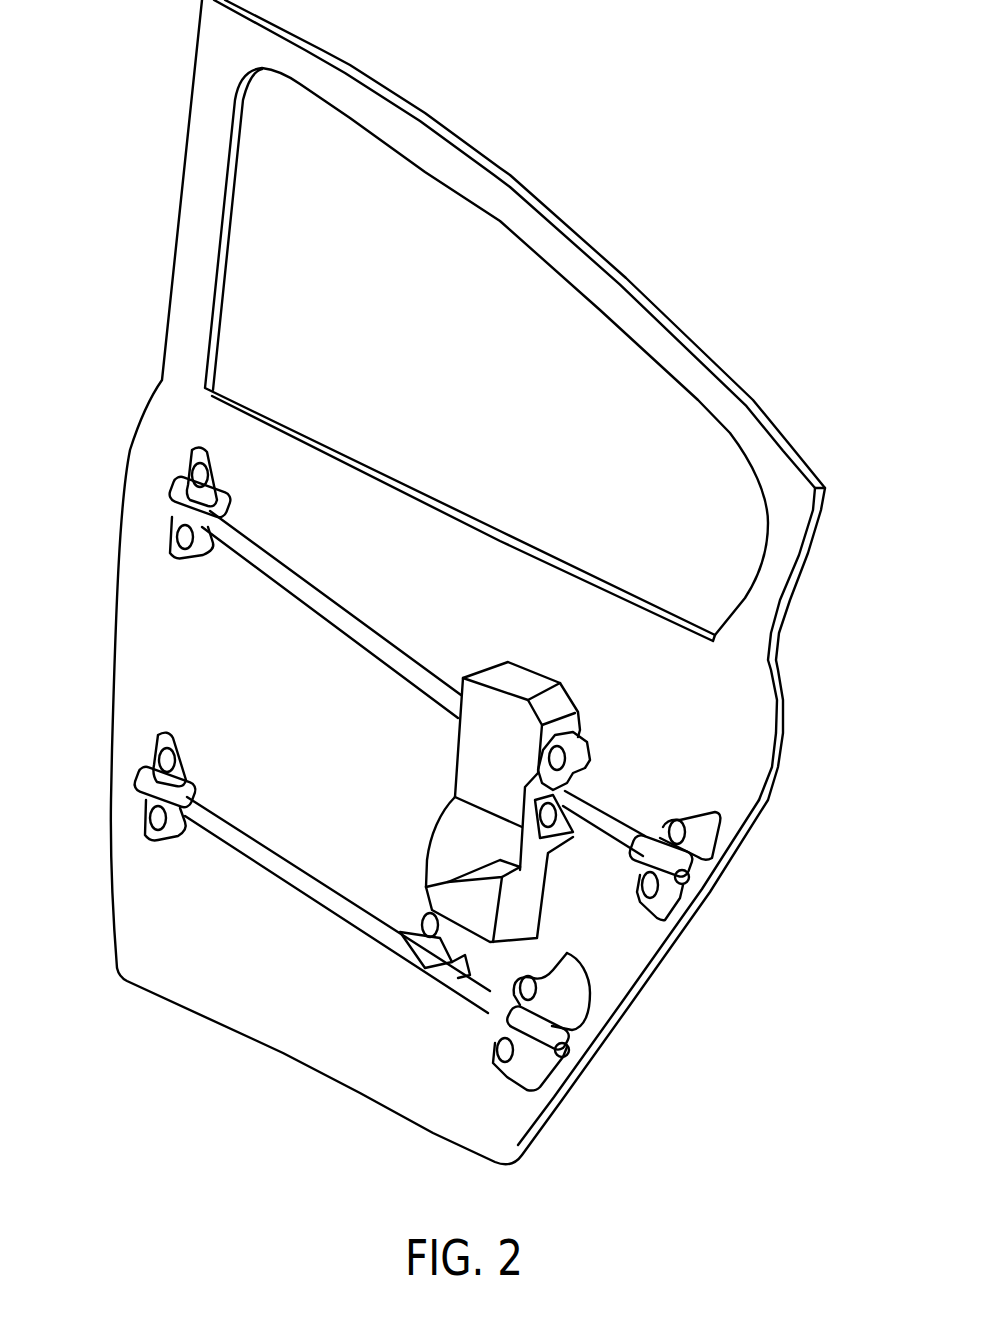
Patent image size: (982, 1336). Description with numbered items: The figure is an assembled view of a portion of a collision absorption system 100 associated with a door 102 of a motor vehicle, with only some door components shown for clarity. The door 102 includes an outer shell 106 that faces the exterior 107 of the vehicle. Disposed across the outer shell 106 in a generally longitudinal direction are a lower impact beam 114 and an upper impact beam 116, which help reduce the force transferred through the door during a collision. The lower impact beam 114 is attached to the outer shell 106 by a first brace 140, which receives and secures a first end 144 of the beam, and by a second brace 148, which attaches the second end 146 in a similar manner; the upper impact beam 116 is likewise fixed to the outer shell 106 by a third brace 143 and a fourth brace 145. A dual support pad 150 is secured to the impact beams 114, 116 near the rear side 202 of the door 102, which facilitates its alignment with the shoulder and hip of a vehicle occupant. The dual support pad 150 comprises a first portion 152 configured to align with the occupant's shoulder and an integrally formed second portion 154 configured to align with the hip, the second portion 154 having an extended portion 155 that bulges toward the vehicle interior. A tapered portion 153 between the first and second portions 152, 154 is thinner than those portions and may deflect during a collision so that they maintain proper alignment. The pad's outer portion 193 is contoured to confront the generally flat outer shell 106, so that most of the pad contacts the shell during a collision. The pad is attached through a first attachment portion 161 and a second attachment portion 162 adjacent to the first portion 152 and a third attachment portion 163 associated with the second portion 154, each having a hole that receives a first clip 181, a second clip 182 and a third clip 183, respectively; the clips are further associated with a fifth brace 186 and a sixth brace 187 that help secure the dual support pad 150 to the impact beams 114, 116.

The collision absorption system 100 is at (402, 602).
The door 102 is at (113, 318).
The outer shell 106 is at (668, 312).
The exterior 107 is at (665, 88).
The lower impact beam 114 is at (243, 843).
The upper impact beam 116 is at (318, 602).
The first brace 140 is at (577, 1003).
The third brace 143 is at (702, 838).
The first end 144 is at (567, 1053).
The fourth brace 145 is at (215, 497).
The second end 146 is at (192, 817).
The second brace 148 is at (167, 733).
The dual support pad 150 is at (477, 763).
The first portion 152 is at (497, 705).
The tapered portion 153 is at (468, 808).
The second portion 154 is at (448, 840).
The extended portion 155 is at (468, 902).
The first attachment portion 161 is at (582, 740).
The second attachment portion 162 is at (543, 822).
The third attachment portion 163 is at (460, 978).
The first clip 181 is at (585, 763).
The second clip 182 is at (545, 832).
The third clip 183 is at (422, 925).
The fifth brace 186 is at (540, 780).
The sixth brace 187 is at (420, 962).
The outer portion 193 is at (535, 667).
The rear side 202 is at (728, 972).